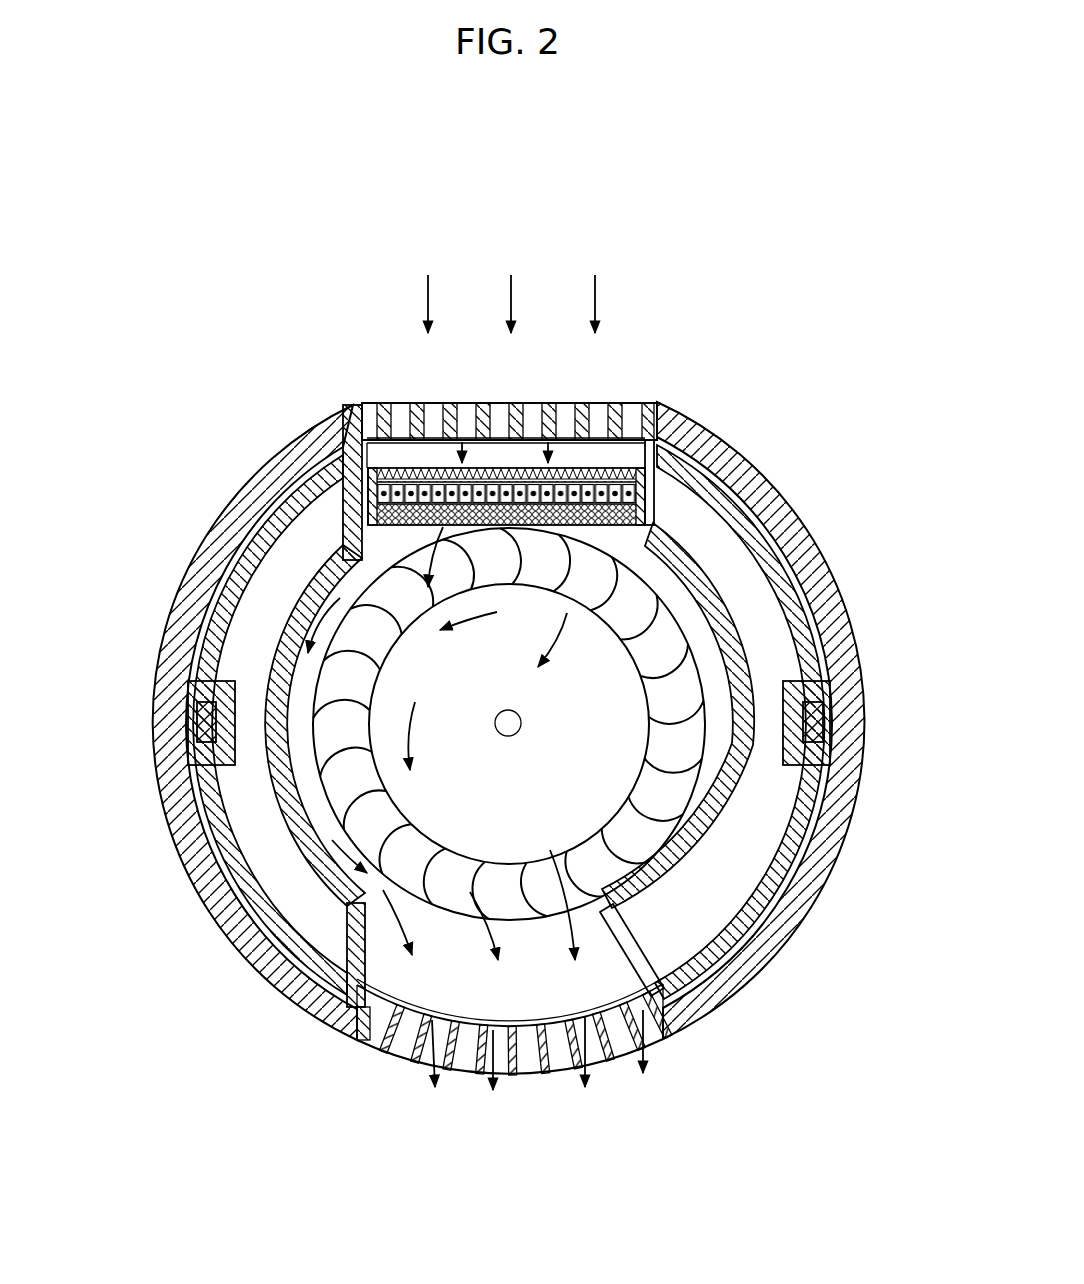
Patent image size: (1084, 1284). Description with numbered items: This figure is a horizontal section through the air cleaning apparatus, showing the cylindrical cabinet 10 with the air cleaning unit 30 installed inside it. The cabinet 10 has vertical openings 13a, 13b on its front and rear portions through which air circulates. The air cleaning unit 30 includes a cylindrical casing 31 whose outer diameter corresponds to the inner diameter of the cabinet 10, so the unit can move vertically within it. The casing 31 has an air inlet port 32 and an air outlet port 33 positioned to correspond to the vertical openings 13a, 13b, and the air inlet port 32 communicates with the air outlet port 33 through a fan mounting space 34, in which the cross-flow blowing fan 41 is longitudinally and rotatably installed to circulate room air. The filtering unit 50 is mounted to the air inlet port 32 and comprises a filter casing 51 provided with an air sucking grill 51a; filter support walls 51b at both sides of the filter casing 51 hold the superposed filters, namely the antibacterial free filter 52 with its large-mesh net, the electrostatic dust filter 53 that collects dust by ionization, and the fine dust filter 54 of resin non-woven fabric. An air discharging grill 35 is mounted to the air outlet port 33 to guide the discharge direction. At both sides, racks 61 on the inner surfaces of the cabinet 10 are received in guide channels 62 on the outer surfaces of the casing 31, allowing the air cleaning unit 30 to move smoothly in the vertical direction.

The cabinet 10 is at (820, 570).
The vertical opening 13a is at (357, 1040).
The vertical opening 13b is at (360, 402).
The air cleaning unit 30 is at (237, 918).
The casing 31 is at (263, 527).
The air inlet port 32 is at (352, 440).
The air outlet port 33 is at (307, 1012).
The fan mounting space 34 is at (298, 778).
The air discharging grill 35 is at (518, 1073).
The cross-flow blowing fan 41 is at (690, 650).
The filtering unit 50 is at (660, 455).
The filter casing 51 is at (653, 408).
The air sucking grill 51a is at (548, 440).
The filter support walls 51b is at (633, 470).
The antibacterial free filter 52 is at (397, 468).
The electrostatic dust filter 53 is at (425, 480).
The fine dust filter 54 is at (498, 495).
The rack 61 is at (196, 740).
The guide channel 62 is at (196, 710).